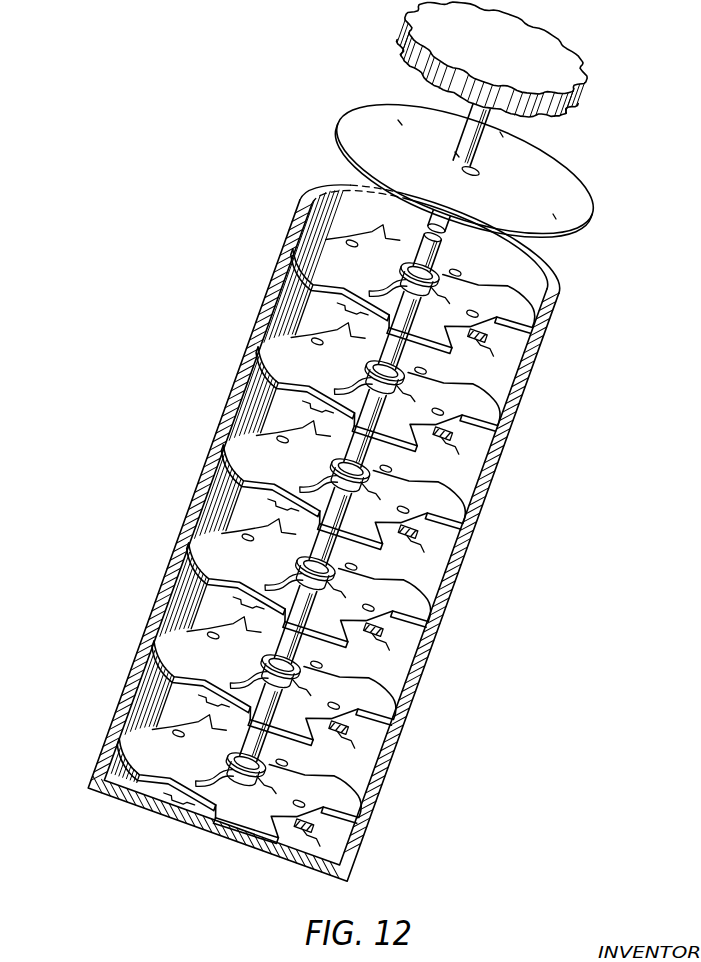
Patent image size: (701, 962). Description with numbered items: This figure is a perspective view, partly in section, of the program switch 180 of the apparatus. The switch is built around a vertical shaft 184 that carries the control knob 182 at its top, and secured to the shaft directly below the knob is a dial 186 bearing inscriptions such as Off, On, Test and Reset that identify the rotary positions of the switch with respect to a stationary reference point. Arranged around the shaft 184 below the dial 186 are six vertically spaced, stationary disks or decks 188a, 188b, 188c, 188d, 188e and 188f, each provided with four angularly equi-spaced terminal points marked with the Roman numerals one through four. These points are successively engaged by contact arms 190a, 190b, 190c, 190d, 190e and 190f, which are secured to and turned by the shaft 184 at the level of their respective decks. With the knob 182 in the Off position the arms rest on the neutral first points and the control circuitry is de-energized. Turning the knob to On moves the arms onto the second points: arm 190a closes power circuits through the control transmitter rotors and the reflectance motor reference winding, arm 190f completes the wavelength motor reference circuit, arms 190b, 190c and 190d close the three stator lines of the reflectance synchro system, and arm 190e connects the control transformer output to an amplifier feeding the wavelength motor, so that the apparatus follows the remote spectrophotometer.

The program switch 180 is at (574, 347).
The control knob 182 is at (581, 74).
The vertical shaft 184 is at (451, 250).
The dial 186 is at (576, 191).
The stationary deck 188a is at (387, 303).
The stationary deck 188b is at (357, 387).
The stationary deck 188c is at (323, 485).
The stationary deck 188d is at (288, 583).
The stationary deck 188e is at (253, 681).
The stationary deck 188f is at (219, 756).
The contact arm 190a is at (392, 280).
The contact arm 190b is at (357, 378).
The contact arm 190c is at (323, 476).
The contact arm 190d is at (288, 574).
The contact arm 190e is at (253, 672).
The contact arm 190f is at (219, 770).